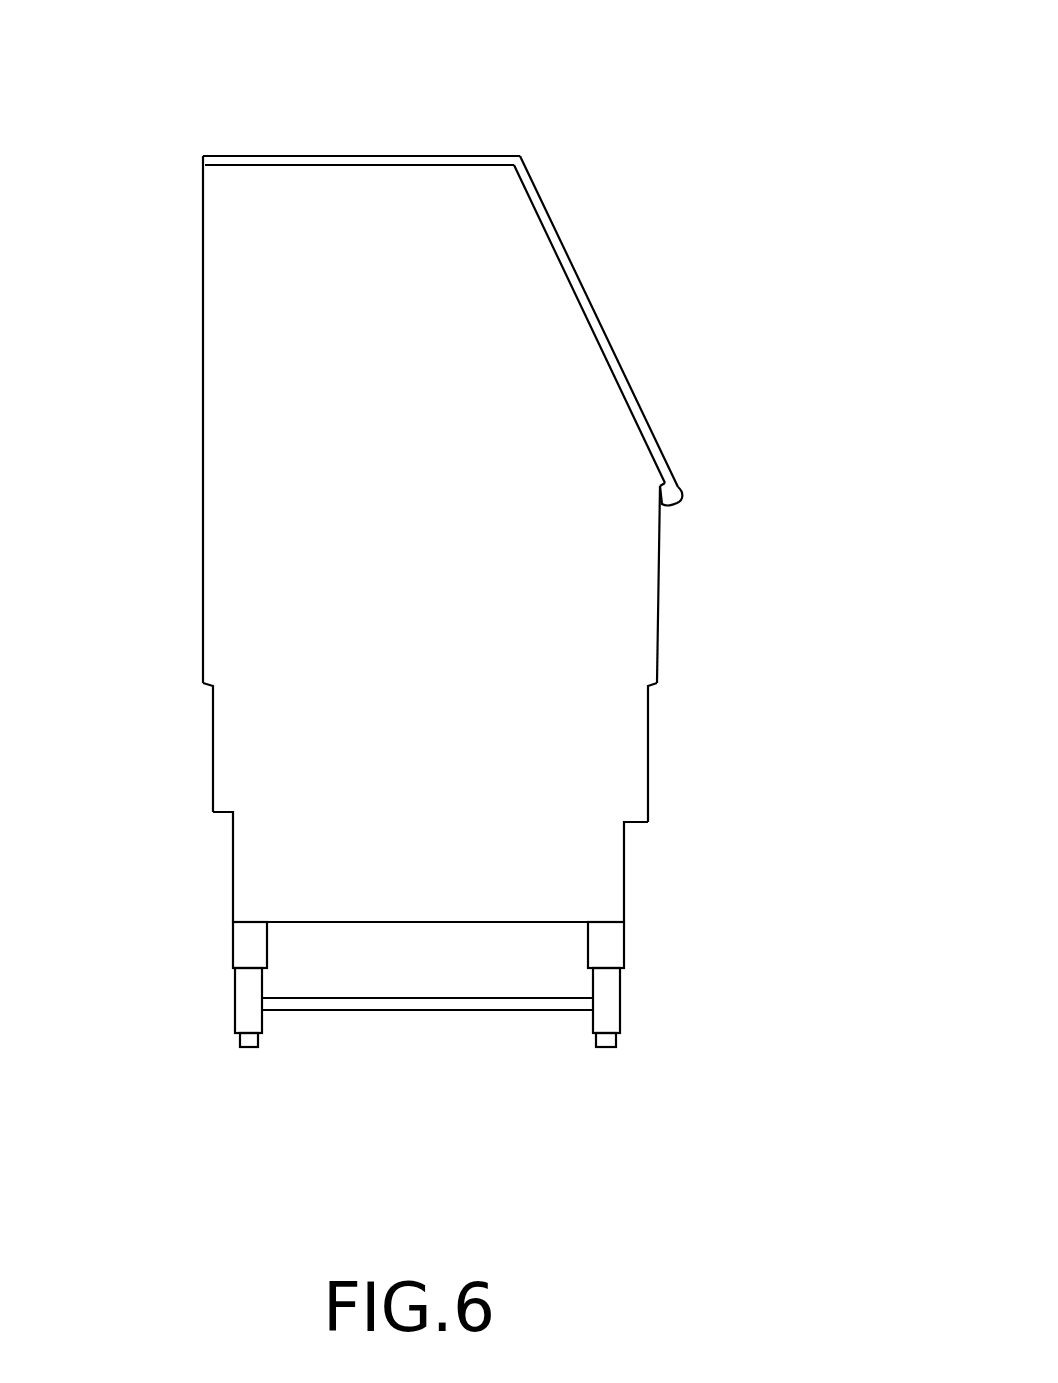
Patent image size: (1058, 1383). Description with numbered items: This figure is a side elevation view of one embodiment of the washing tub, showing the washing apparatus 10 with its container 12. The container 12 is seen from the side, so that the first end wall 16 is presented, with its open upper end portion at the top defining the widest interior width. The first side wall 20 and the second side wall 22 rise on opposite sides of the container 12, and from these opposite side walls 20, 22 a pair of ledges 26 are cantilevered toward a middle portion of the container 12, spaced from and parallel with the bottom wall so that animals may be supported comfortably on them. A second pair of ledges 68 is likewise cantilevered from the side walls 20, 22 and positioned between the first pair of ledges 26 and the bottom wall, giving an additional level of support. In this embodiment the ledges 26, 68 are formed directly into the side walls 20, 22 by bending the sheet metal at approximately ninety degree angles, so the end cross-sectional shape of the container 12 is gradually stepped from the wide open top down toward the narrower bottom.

The washing apparatus 10 is at (825, 91).
The container 12 is at (696, 332).
The first end wall 16 is at (292, 316).
The first side wall 20 is at (687, 614).
The second side wall 22 is at (178, 572).
The pair of ledges 26 is at (192, 708).
The second pair of ledges 68 is at (213, 840).